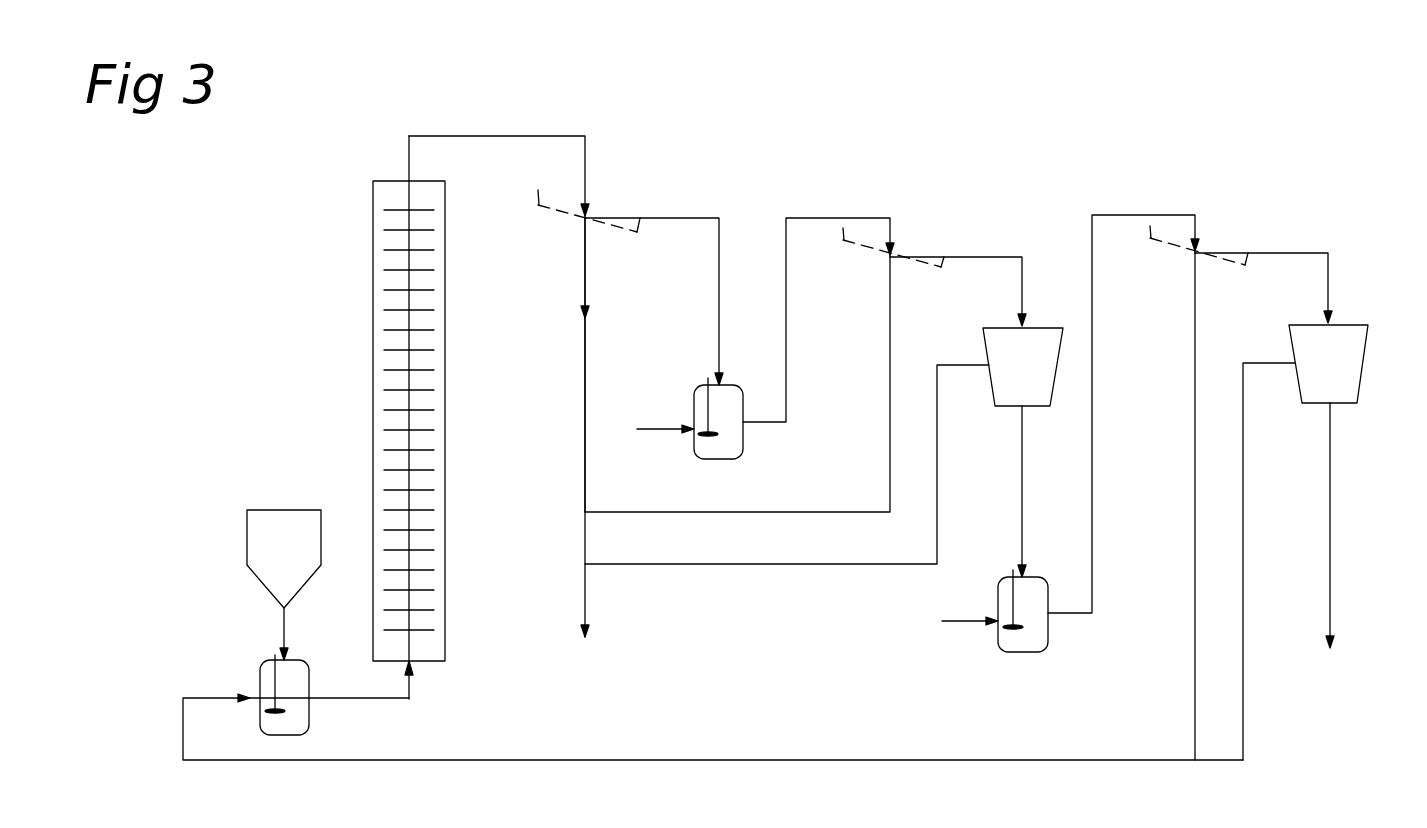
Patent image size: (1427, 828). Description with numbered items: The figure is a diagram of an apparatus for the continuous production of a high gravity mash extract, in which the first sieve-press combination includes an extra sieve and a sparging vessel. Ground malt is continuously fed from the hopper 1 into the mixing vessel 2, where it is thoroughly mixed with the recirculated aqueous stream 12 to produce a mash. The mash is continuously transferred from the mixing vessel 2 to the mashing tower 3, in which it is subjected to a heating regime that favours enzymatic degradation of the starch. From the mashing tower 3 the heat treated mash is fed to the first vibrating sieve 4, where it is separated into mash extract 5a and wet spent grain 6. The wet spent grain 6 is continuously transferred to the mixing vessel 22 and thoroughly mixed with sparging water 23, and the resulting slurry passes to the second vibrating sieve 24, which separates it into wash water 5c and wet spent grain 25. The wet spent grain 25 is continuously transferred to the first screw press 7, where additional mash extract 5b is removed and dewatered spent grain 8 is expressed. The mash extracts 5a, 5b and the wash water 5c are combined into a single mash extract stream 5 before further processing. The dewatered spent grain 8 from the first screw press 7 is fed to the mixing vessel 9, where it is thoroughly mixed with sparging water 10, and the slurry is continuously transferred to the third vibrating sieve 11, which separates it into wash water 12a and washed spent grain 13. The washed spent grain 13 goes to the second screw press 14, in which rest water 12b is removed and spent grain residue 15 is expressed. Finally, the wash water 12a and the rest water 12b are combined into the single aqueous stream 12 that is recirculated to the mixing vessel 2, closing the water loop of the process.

The hopper 1 is at (286, 522).
The mixing vessel 2 is at (300, 724).
The mashing tower 3 is at (435, 284).
The first vibrating sieve 4 is at (588, 224).
The mash extract stream 5 is at (587, 600).
The mash extract 5a is at (587, 268).
The additional mash extract 5b is at (778, 562).
The wash water 5c is at (732, 510).
The wet spent grain 6 is at (683, 218).
The first screw press 7 is at (1038, 330).
The dewatered spent grain 8 is at (1025, 447).
The mixing vessel 9 is at (1037, 586).
The sparging water 10 is at (956, 624).
The third vibrating sieve 11 is at (1190, 254).
The recirculated aqueous stream 12 is at (475, 760).
The wash water 12a is at (1196, 474).
The rest water 12b is at (1244, 500).
The washed spent grain 13 is at (1288, 252).
The second screw press 14 is at (1354, 334).
The spent grain residue 15 is at (1332, 432).
The mixing vessel 22 is at (733, 390).
The sparging water 23 is at (653, 432).
The second vibrating sieve 24 is at (886, 258).
The wet spent grain 25 is at (978, 256).